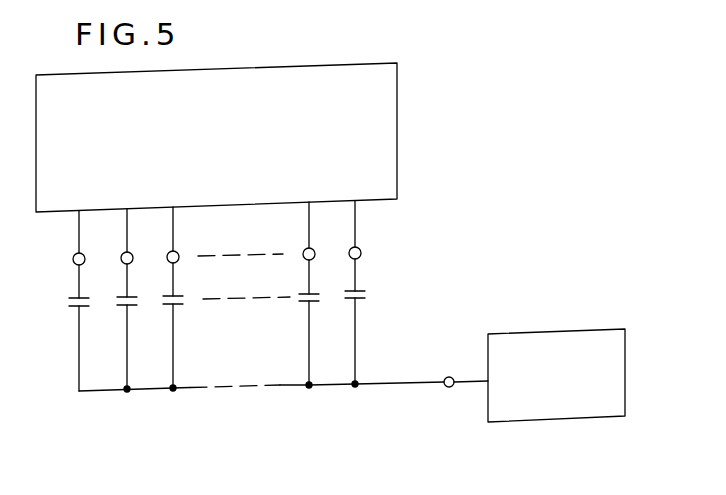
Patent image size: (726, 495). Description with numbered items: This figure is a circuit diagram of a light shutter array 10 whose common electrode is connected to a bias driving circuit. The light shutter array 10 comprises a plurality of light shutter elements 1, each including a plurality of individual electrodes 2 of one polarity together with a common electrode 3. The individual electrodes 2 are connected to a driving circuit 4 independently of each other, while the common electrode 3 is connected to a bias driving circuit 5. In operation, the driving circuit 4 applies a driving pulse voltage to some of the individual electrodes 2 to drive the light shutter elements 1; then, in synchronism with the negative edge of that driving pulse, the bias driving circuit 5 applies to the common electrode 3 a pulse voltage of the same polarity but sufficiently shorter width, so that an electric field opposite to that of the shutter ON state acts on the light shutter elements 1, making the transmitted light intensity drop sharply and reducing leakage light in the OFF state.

The driving circuit 4 is at (397, 115).
The individual electrodes 2 is at (310, 270).
The light shutter element 1 is at (323, 299).
The light shutter array 10 is at (265, 296).
The common electrode 3 is at (408, 383).
The bias driving circuit 5 is at (557, 330).